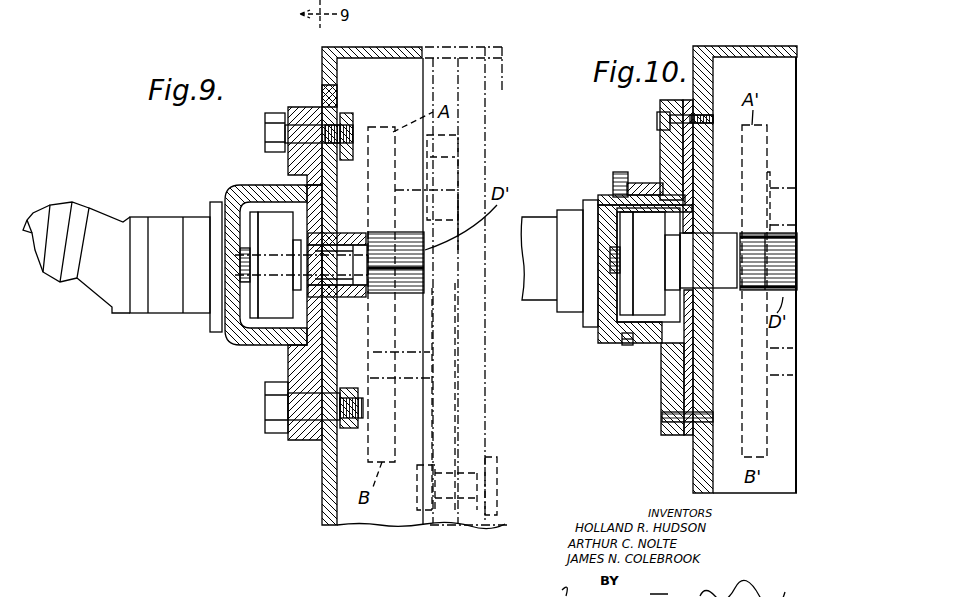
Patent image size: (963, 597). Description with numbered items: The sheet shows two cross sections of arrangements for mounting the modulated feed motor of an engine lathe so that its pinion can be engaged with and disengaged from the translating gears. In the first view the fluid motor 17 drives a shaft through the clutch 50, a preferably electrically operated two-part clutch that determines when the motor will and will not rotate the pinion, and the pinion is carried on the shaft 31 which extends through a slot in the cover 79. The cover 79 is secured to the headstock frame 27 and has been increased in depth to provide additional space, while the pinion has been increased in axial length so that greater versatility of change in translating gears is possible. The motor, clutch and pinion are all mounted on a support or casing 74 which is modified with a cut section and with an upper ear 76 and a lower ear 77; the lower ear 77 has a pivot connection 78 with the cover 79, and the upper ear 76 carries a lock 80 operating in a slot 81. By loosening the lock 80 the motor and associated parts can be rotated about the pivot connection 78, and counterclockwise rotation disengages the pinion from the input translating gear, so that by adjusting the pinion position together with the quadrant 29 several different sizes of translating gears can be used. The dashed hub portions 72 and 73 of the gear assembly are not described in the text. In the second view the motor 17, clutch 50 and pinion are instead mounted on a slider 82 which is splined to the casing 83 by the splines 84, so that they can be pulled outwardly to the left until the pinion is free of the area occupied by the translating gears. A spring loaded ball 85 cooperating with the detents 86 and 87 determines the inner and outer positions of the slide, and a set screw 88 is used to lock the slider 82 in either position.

In FIG. 9, the fluid motor 17 is at (155, 215).
In FIG. 9, the headstock frame 27 is at (483, 115).
In FIG. 9, the quadrant 29 is at (458, 403).
In FIG. 9, the shaft 31 is at (343, 263).
In FIG. 9, the clutch 50 is at (272, 297).
In FIG. 10, the clutch 50 is at (653, 305).
In FIG. 9, the rotor hub 72 is at (452, 502).
In FIG. 9, the rotor hub flange 73 is at (473, 507).
In FIG. 9, the support or casing 74 is at (205, 203).
In FIG. 9, the upper ear 76 is at (287, 163).
In FIG. 9, the lower ear 77 is at (307, 358).
In FIG. 9, the pivot connection 78 is at (300, 437).
In FIG. 9, the cover 79 is at (375, 47).
In FIG. 10, the cover 79 is at (762, 23).
In FIG. 9, the lock 80 is at (296, 128).
In FIG. 9, the slot 81 is at (322, 85).
In FIG. 10, the slider 82 is at (600, 183).
In FIG. 10, the casing 83 is at (670, 392).
In FIG. 10, the splines 84 is at (602, 332).
In FIG. 9, the spring loaded ball 85 is at (343, 233).
In FIG. 10, the spring loaded ball 85 is at (637, 183).
In FIG. 10, the detent 86 is at (673, 193).
In FIG. 10, the detent 87 is at (680, 205).
In FIG. 10, the set screw 88 is at (623, 350).